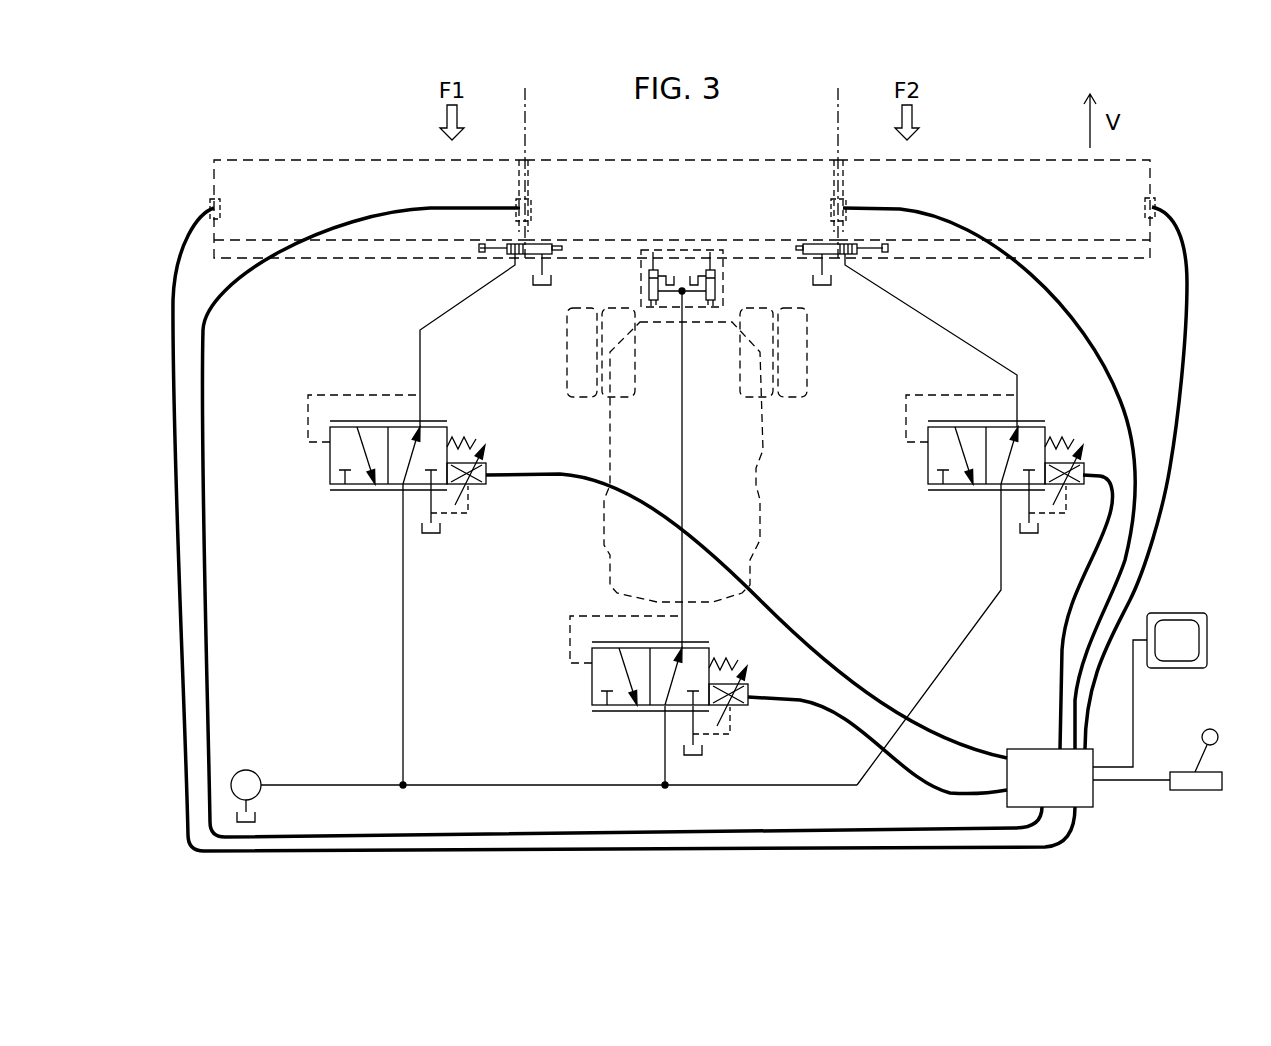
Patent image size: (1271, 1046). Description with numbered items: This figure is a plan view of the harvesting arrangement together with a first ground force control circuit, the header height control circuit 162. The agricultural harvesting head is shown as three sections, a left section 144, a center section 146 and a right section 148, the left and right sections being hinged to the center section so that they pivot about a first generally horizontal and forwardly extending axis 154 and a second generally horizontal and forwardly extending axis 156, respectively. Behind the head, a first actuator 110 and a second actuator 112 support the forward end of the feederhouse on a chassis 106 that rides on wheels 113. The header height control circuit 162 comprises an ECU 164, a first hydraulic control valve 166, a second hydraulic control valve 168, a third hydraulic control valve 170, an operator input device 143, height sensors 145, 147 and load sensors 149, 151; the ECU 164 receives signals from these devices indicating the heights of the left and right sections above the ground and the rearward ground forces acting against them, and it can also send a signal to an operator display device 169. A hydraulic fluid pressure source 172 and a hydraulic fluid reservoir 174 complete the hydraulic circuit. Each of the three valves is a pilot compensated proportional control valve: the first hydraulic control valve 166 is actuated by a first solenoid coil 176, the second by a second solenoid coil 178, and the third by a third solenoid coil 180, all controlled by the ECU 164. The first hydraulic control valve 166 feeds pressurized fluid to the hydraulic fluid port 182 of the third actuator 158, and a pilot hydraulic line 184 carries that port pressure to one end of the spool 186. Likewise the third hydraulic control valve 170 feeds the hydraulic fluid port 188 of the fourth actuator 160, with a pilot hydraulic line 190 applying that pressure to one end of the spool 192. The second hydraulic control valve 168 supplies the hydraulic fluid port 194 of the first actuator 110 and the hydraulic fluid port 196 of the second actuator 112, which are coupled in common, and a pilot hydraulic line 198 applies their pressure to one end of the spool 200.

The vehicle 106 is at (770, 502).
The first actuator 110 is at (648, 288).
The second actuator 112 is at (718, 288).
The wheels 113 is at (548, 368).
The operator input device 143 is at (1180, 772).
The left section 144 is at (368, 160).
The height sensor 145 is at (209, 205).
The center section 146 is at (787, 160).
The height sensor 147 is at (1157, 205).
The right section 148 is at (1005, 160).
The load sensor 149 is at (518, 196).
The load sensor 151 is at (848, 196).
The first generally horizontal and forwardly extending axis 154 is at (527, 95).
The second generally horizontal and forwardly extending axis 156 is at (838, 92).
The third actuator 158 is at (538, 228).
The fourth actuator 160 is at (825, 228).
The header height control circuit 162 is at (293, 338).
The ECU 164 is at (1093, 800).
The first hydraulic control valve 166 is at (391, 563).
The second hydraulic control valve 168 is at (652, 678).
The operator display device 169 is at (1185, 613).
The third hydraulic control valve 170 is at (960, 589).
The hydraulic fluid pressure source 172 is at (253, 770).
The hydraulic fluid reservoir 174 is at (541, 284).
The first solenoid coil 176 is at (488, 484).
The second solenoid coil 178 is at (745, 707).
The third solenoid coil 180 is at (1060, 505).
The hydraulic fluid port 182 is at (513, 258).
The pilot hydraulic line 184 is at (330, 393).
The spool 186 is at (330, 470).
The hydraulic fluid port 188 is at (850, 258).
The pilot hydraulic line 190 is at (905, 412).
The spool 192 is at (928, 470).
The hydraulic fluid port 194 is at (660, 306).
The hydraulic fluid port 196 is at (708, 306).
The pilot hydraulic line 198 is at (575, 614).
The spool 200 is at (592, 692).